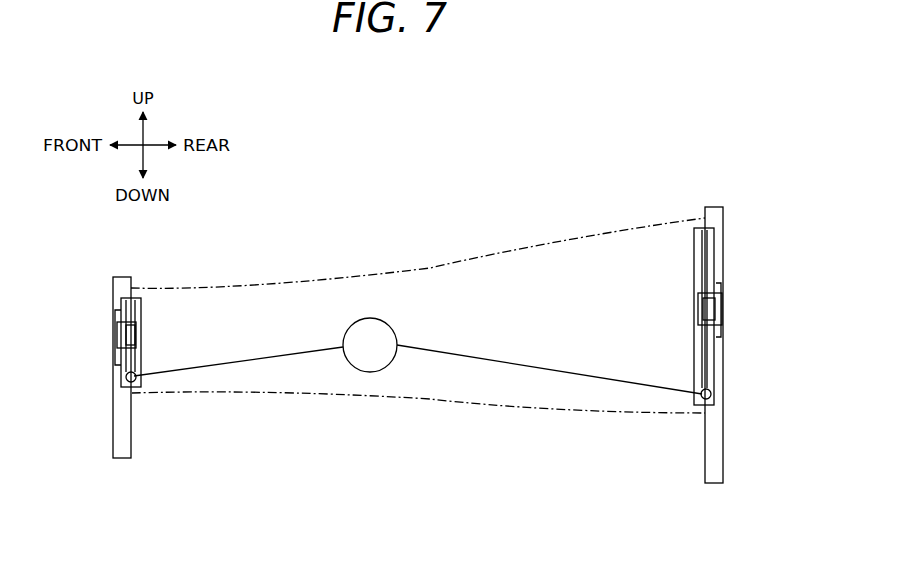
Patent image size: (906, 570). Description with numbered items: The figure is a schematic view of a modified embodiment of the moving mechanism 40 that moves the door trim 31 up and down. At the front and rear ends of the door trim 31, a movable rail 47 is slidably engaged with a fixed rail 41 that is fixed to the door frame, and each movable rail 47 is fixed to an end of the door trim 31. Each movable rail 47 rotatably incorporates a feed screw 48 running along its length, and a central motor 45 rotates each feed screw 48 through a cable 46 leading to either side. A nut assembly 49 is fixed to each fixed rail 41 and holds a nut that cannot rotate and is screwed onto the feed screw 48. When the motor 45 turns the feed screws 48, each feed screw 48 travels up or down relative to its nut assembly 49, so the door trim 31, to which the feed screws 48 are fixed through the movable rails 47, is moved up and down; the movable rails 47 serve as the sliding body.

The door trim 31 is at (470, 256).
The moving mechanism 40 is at (418, 323).
The fixed rail 41 is at (113, 435).
The motor 45 is at (363, 318).
The cable 46 is at (192, 370).
The movable rail 47 is at (141, 308).
The feed screw 48 is at (120, 366).
The nut assembly 49 is at (118, 336).